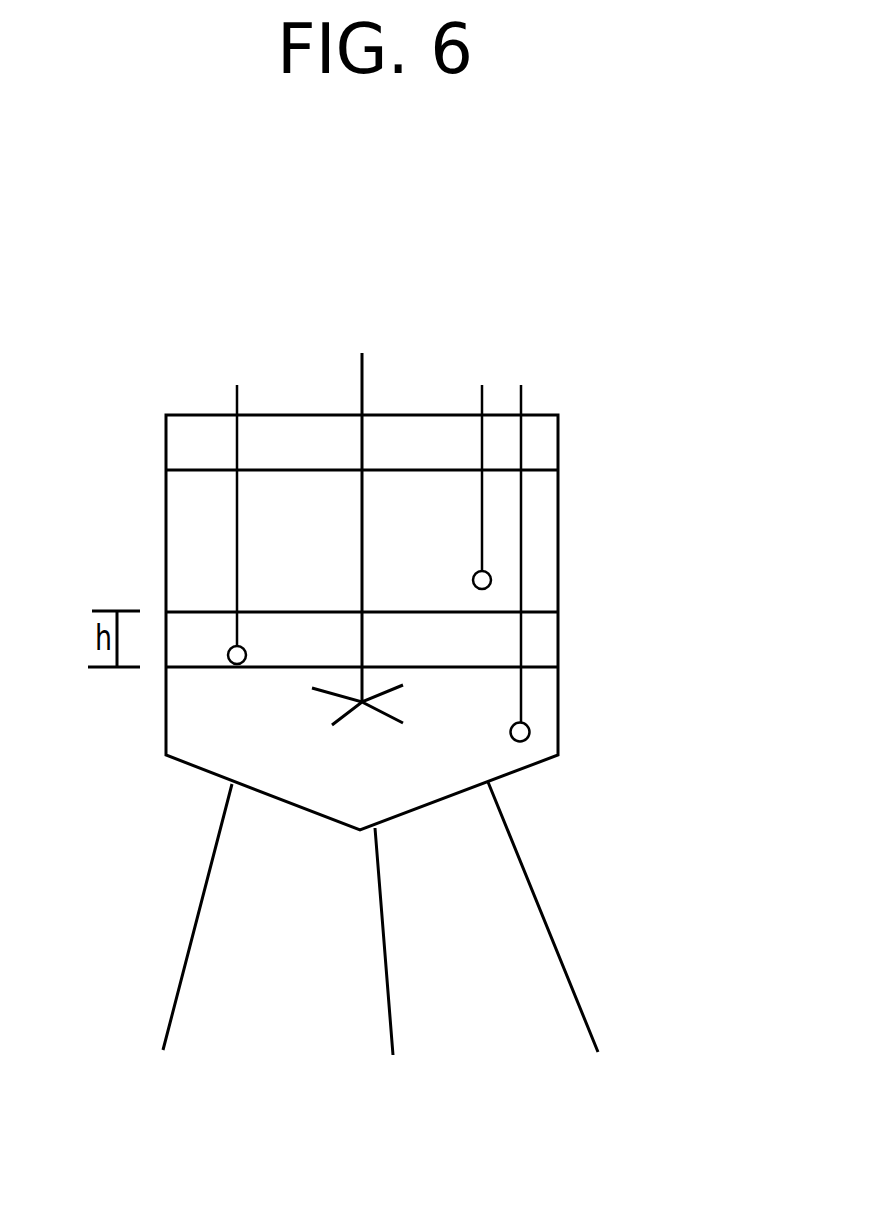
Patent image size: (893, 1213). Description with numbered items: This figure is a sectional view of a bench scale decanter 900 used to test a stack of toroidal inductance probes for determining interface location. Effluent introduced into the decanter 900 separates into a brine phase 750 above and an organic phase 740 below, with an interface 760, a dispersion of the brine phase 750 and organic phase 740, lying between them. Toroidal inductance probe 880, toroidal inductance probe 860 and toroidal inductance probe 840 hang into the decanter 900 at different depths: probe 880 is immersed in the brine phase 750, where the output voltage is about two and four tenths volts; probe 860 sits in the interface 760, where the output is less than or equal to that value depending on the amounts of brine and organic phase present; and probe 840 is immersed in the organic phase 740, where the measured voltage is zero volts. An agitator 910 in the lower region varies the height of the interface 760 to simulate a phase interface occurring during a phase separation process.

The bench scale decanter 900 is at (400, 735).
The brine phase 750 is at (335, 542).
The interface 760 is at (330, 654).
The organic phase 740 is at (258, 706).
The toroidal inductance probe 860 is at (228, 501).
The toroidal inductance probe 880 is at (434, 467).
The toroidal inductance probe 840 is at (540, 539).
The agitator 910 is at (389, 557).